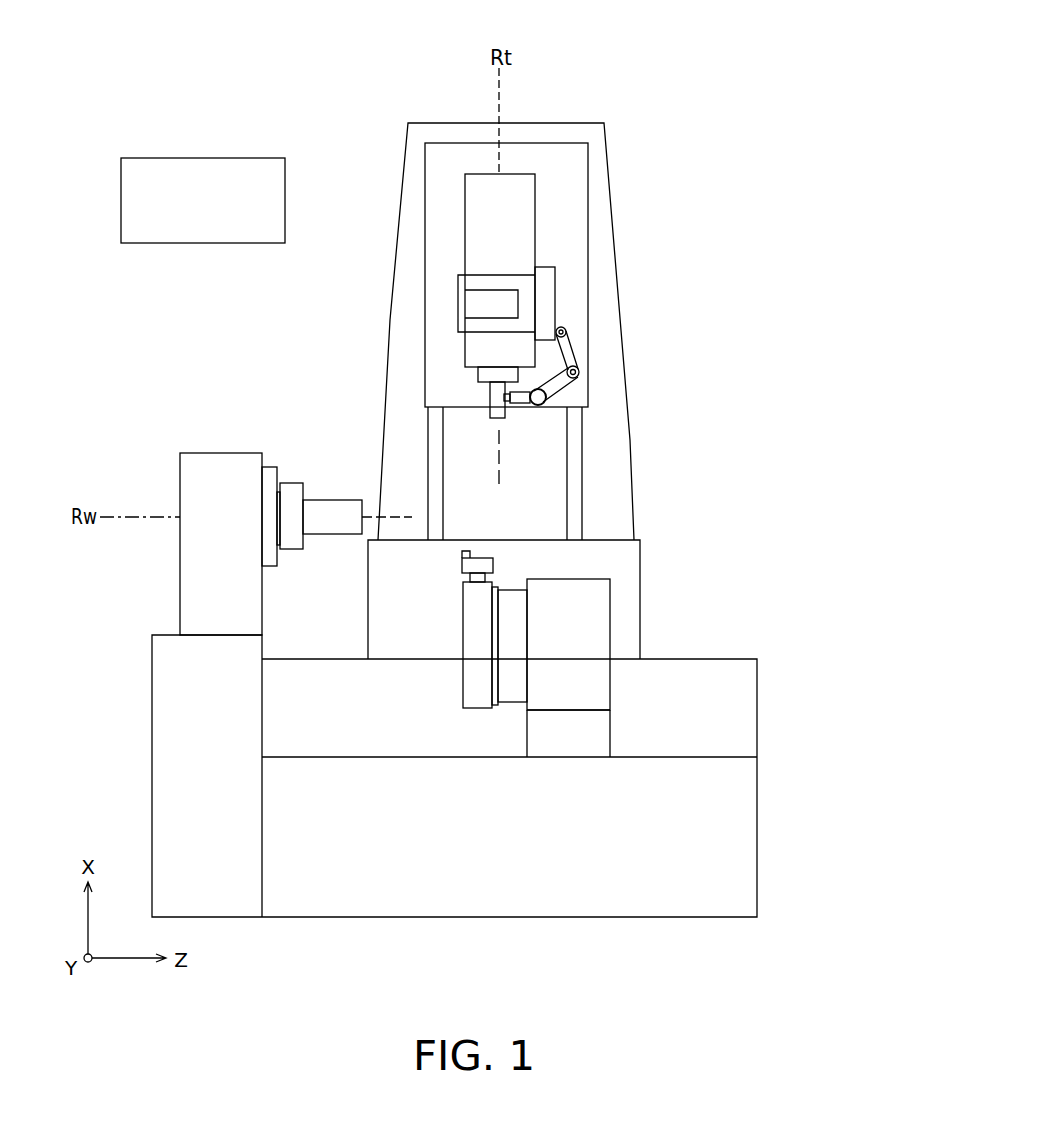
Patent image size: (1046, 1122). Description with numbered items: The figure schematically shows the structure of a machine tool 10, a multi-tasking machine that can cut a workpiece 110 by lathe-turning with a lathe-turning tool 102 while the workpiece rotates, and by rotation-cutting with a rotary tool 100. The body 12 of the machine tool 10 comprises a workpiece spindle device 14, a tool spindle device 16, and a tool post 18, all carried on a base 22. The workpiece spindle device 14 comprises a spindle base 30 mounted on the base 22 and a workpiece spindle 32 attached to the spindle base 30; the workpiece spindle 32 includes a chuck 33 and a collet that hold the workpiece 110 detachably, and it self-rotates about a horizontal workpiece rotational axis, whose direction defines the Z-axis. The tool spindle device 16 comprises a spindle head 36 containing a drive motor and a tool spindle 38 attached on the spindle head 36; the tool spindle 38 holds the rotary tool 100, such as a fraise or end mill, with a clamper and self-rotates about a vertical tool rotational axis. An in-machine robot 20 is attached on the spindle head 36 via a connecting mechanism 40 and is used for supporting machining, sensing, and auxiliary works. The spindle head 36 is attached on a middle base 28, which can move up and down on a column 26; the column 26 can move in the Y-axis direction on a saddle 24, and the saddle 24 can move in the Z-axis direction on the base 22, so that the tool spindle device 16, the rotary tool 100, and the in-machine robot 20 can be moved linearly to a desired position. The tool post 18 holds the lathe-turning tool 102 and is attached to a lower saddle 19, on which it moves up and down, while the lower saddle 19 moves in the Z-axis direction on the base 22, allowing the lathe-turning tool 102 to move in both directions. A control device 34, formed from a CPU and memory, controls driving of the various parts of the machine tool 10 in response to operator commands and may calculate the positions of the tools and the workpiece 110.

The machine tool 10 is at (633, 74).
The body 12 is at (449, 541).
The workpiece spindle device 14 is at (154, 552).
The tool spindle device 16 is at (548, 240).
The tool post 18 is at (613, 622).
The lower saddle 19 is at (587, 737).
The in-machine robot 20 is at (540, 303).
The base 22 is at (621, 887).
The saddle 24 is at (623, 567).
The column 26 is at (603, 486).
The middle base 28 is at (576, 185).
The spindle base 30 is at (208, 462).
The workpiece spindle 32 is at (267, 470).
The chuck 33 is at (290, 490).
The control device 34 is at (167, 158).
The spindle head 36 is at (481, 186).
The tool spindle 38 is at (520, 376).
The connecting mechanism 40 is at (478, 282).
The rotary tool 100 is at (488, 393).
The lathe-turning tool 102 is at (465, 555).
The workpiece 110 is at (323, 528).